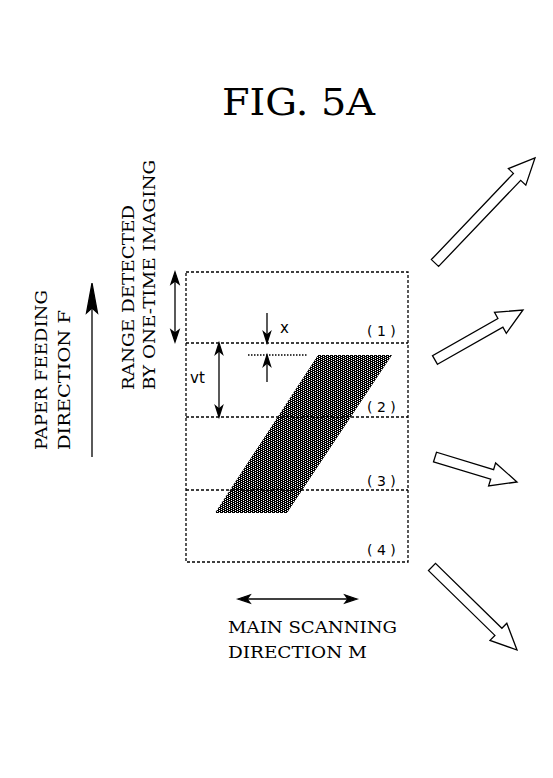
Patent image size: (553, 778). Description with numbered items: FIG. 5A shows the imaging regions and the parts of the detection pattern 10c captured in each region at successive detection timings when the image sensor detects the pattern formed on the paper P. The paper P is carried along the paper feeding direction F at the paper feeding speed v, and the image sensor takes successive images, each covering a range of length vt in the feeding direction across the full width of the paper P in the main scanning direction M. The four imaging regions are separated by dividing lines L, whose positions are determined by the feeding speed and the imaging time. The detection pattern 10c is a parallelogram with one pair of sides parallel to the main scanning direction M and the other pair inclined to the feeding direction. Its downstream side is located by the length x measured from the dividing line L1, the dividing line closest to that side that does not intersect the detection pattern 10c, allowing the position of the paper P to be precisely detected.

The paper P is at (186, 542).
The dividing lines L is at (360, 418).
The dividing line L1 is at (238, 342).
The detection pattern 10c is at (248, 458).